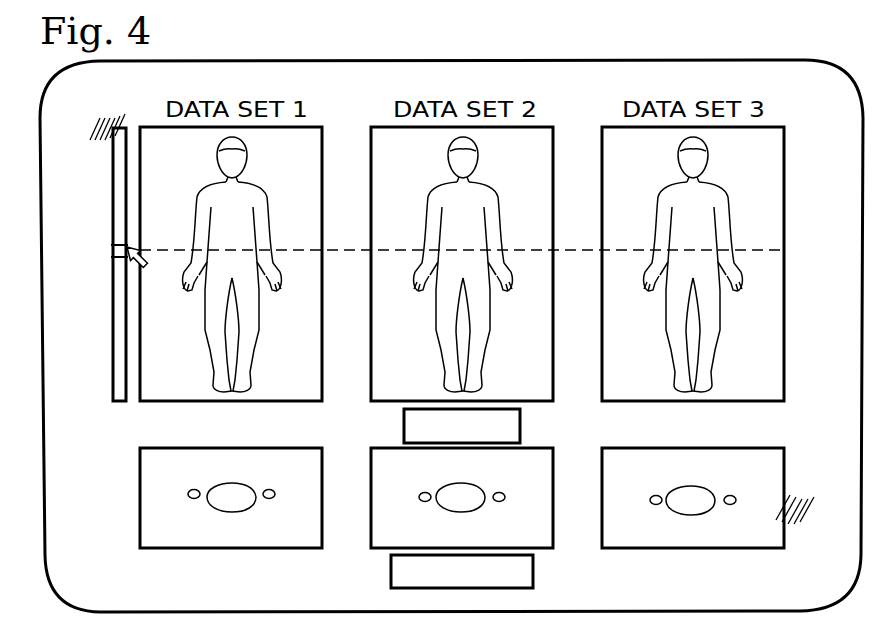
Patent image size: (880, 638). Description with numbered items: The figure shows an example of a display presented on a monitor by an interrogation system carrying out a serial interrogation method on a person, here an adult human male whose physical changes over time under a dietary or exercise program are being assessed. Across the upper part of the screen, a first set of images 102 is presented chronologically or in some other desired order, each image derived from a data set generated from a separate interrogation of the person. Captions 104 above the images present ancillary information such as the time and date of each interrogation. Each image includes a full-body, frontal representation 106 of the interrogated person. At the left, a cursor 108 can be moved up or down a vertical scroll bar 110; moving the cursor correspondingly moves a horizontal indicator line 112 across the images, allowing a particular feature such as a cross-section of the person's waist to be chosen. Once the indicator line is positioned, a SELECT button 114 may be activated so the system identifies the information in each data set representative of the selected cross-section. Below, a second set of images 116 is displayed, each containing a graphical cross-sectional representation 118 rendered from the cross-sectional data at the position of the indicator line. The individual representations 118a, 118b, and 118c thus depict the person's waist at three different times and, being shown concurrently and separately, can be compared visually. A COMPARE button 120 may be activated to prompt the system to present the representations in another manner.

The first set of images 102 is at (366, 117).
The captions 104 is at (642, 91).
The full-body, frontal representation 106 is at (417, 200).
The cursor 108 is at (146, 266).
The vertical scroll bar 110 is at (113, 198).
The horizontal indicator line 112 is at (352, 253).
The SELECT button 114 is at (522, 435).
The second set of images 116 is at (392, 437).
The cross-sectional representation 118 is at (447, 500).
The individual cross-sectional representation 118a is at (231, 513).
The individual cross-sectional representation 118b is at (460, 513).
The individual cross-sectional representation 118c is at (690, 516).
The COMPARE button 120 is at (536, 570).